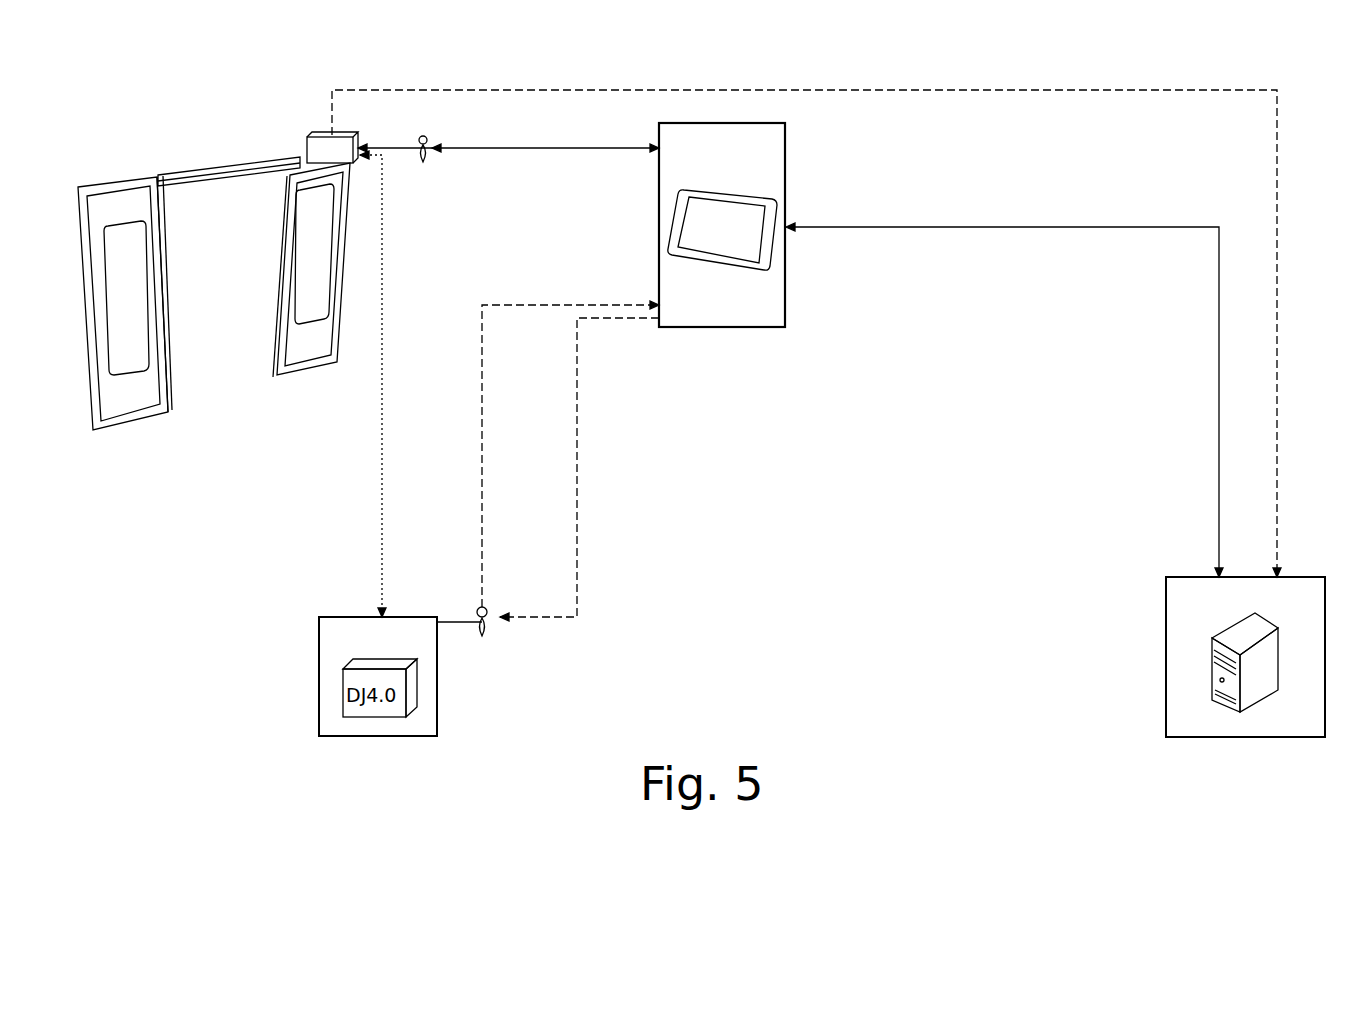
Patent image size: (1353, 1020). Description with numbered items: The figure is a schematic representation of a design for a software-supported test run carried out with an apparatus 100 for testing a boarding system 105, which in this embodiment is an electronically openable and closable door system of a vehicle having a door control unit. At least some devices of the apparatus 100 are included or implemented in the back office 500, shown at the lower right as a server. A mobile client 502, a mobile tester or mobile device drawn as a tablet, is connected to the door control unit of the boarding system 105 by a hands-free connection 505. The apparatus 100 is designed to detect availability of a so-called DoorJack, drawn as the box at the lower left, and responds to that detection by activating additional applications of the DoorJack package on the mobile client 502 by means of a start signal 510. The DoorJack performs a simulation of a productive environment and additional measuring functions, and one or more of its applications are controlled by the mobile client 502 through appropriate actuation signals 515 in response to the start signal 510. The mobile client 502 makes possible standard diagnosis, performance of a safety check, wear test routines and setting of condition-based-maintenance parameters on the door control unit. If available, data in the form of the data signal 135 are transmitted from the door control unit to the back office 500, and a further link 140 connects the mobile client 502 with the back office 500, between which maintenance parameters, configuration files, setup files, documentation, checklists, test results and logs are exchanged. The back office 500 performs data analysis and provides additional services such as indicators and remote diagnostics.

The boarding system 105 is at (194, 142).
The mobile client 502 is at (722, 225).
The hands-free connection 505 is at (565, 150).
The start signal 510 is at (512, 303).
The actuation signals 515 is at (577, 490).
The data signal 135 is at (1090, 92).
The communication link 140 is at (993, 230).
The apparatus 100 is at (1234, 634).
The back office 500 is at (1239, 624).